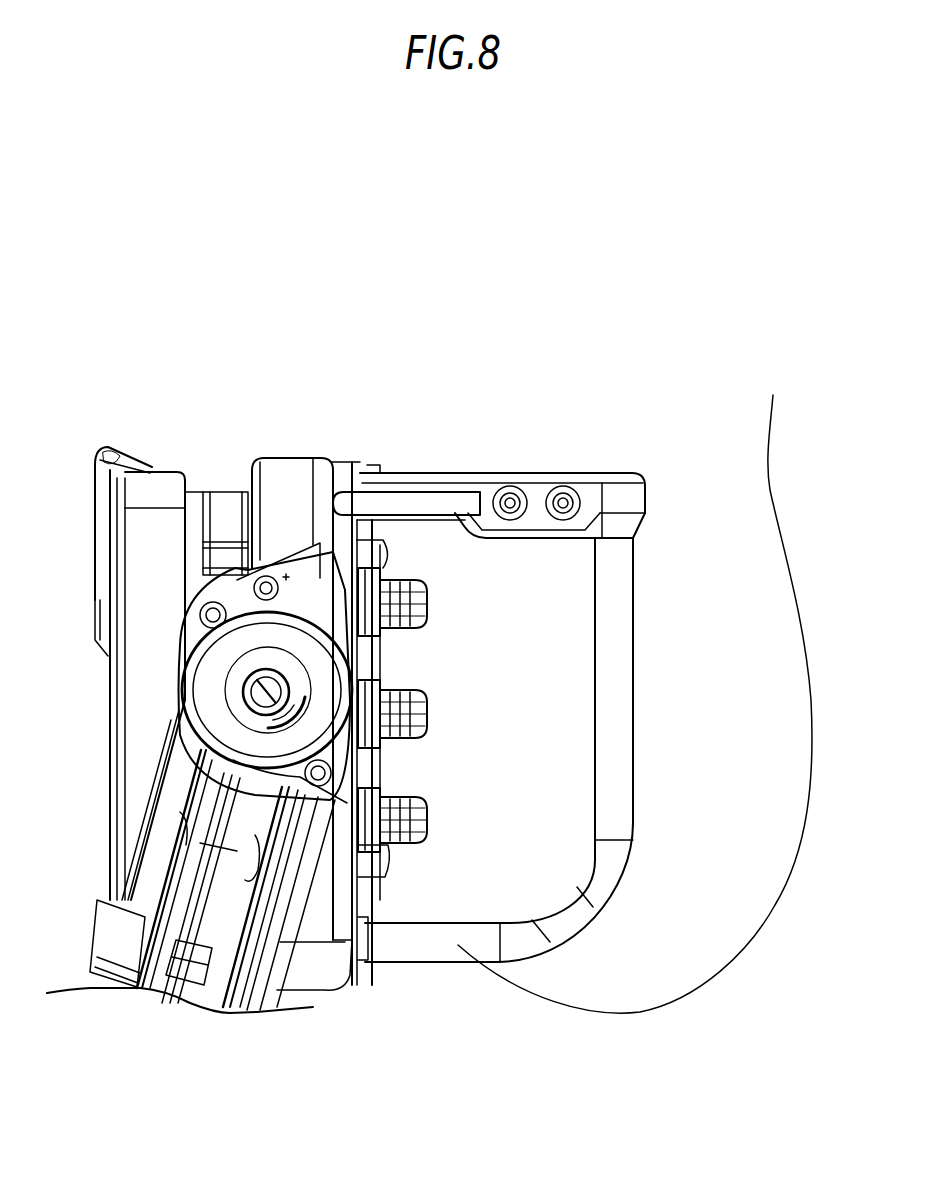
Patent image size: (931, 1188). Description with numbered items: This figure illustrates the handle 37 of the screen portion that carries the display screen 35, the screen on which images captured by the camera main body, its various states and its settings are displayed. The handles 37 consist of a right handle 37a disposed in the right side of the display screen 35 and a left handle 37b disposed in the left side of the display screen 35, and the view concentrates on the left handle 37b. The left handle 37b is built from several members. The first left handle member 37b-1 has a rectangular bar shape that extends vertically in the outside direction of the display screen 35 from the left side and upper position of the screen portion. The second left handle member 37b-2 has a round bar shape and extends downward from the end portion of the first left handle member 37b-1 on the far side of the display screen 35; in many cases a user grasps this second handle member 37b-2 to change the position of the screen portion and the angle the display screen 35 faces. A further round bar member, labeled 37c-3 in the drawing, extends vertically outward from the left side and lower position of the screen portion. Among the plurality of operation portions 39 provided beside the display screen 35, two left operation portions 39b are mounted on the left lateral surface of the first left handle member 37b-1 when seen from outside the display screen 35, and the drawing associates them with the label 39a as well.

The handle 37 is at (272, 340).
The right handle 37a is at (587, 650).
The left handle 37b is at (842, 350).
The first left handle member 37b-1 is at (410, 478).
The second left handle member 37b-2 is at (620, 572).
The third cover portion 37c-3 is at (635, 687).
The operation portions 39 is at (427, 588).
The fastener 39a is at (550, 440).
The left operation portions 39b is at (563, 475).
The display screen 35 is at (405, 652).